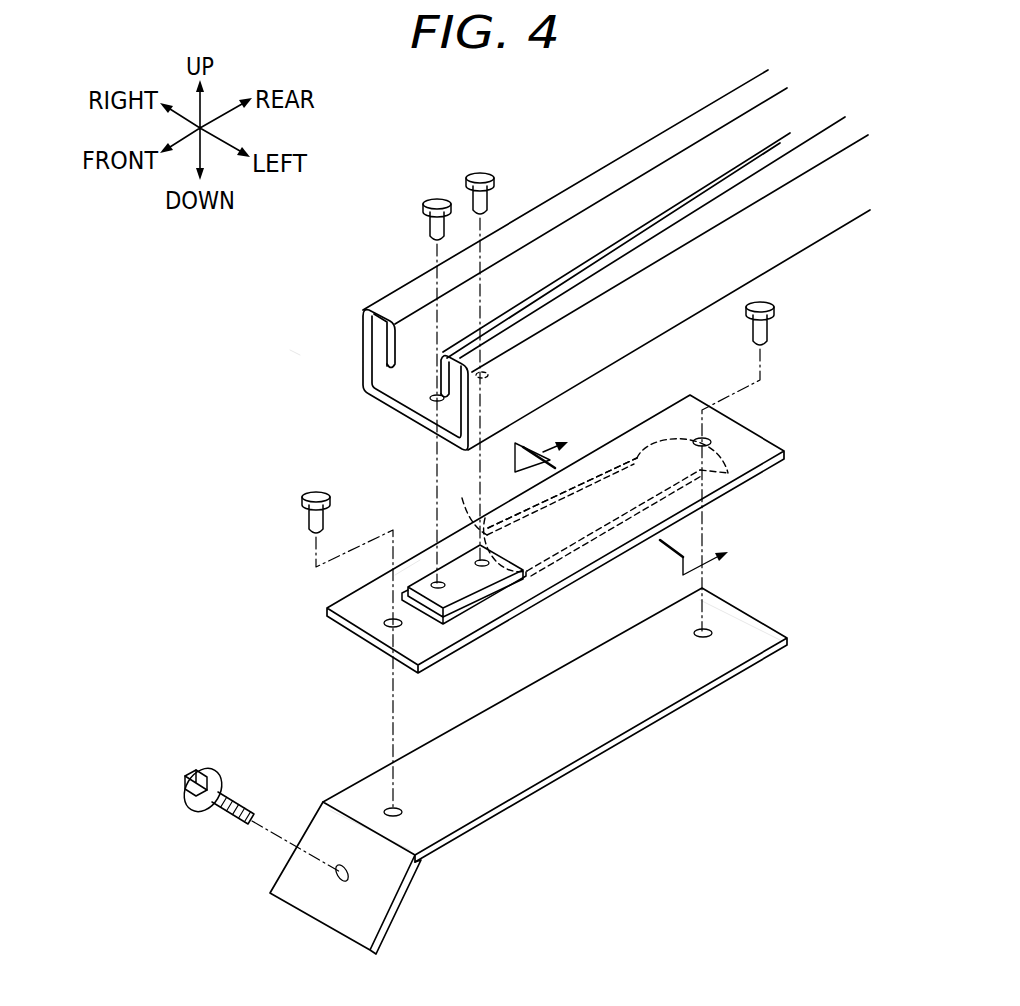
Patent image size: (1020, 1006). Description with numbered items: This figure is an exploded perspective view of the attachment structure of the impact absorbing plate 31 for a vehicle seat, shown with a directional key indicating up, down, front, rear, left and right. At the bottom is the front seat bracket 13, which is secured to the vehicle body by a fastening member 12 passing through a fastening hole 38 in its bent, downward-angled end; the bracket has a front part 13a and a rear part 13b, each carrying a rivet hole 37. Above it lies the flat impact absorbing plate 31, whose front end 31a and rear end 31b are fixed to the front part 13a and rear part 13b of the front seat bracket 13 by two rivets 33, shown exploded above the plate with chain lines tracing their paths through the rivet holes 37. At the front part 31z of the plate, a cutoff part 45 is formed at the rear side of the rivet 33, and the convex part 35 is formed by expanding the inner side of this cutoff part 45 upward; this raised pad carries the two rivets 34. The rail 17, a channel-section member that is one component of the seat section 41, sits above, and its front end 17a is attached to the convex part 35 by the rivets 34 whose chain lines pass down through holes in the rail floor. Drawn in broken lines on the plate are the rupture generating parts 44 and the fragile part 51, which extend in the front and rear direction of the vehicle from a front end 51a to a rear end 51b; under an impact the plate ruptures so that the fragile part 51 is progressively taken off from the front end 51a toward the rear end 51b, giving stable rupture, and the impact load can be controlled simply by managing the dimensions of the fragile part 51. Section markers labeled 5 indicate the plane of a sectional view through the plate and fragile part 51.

The fastening member 12 is at (180, 773).
The front seat bracket 13 is at (547, 779).
The front part of the front seat bracket 13a is at (417, 823).
The rear part of the front seat bracket 13b is at (735, 652).
The rail 17 is at (586, 157).
The front end of the rail 17a is at (389, 282).
The impact absorbing plate 31 is at (550, 521).
The front end of the impact absorbing plate 31a is at (353, 613).
The rear end of the impact absorbing plate 31b is at (725, 418).
The front part of the impact absorbing plate 31z is at (412, 549).
The rivet 33 is at (775, 305).
The rivet 34 is at (437, 197).
The convex part 35 is at (430, 576).
The rivet hole 37 is at (708, 631).
The fastening hole 38 is at (350, 874).
The seat section 41 is at (279, 345).
The rupture generating part 44 is at (617, 467).
The cutoff part 45 is at (430, 614).
The fragile part 51 is at (631, 441).
The front end of the fragile part 51a is at (462, 502).
The rear end of the fragile part 51b is at (740, 476).
The section line of FIG. 5 is at (633, 499).